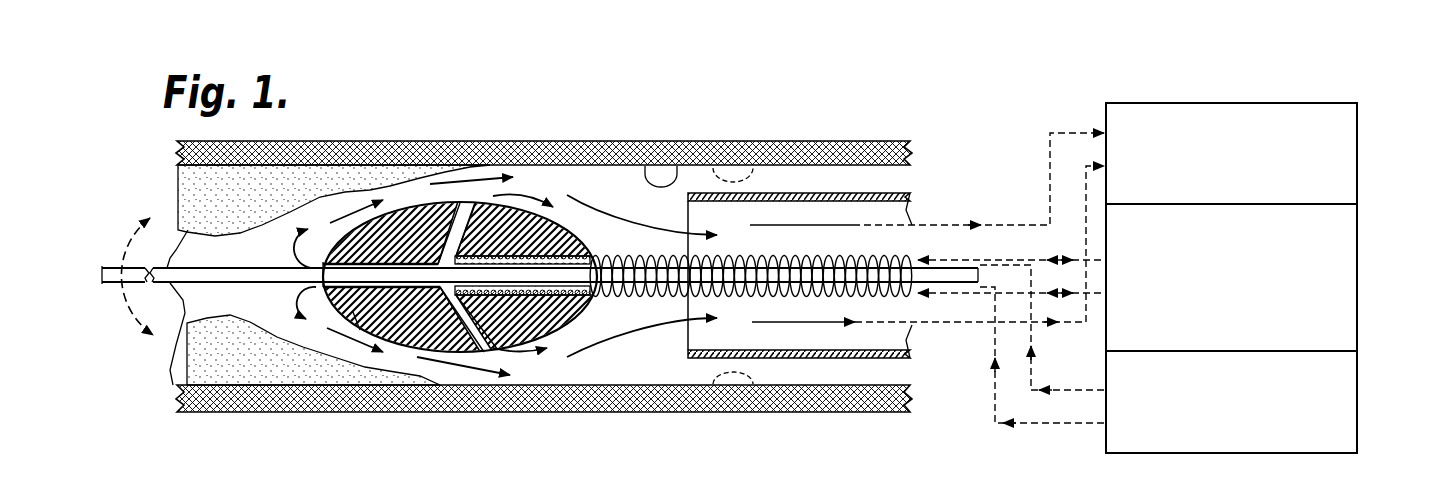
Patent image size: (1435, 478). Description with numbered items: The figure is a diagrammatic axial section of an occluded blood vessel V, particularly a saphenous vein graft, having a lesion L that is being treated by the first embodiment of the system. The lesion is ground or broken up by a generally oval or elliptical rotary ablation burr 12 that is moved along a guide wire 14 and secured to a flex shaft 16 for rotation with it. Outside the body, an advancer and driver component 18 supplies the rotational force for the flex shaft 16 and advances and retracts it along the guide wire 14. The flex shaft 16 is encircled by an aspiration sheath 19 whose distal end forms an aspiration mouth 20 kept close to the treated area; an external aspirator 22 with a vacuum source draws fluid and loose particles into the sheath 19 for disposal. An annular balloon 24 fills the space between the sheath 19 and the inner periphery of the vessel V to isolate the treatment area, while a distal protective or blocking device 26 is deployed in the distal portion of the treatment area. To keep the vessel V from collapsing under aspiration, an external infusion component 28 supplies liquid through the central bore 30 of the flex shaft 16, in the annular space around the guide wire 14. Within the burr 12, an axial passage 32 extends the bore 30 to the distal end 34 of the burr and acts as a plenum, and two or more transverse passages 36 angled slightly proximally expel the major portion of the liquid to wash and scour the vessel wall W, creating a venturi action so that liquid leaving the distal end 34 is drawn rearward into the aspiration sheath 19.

The rotary ablation burr 12 is at (425, 210).
The guide wire 14 is at (168, 283).
The flex shaft 16 is at (637, 290).
The advancer and driver component 18 is at (1330, 278).
The aspiration sheath 19 is at (895, 197).
The aspiration mouth 20 is at (697, 341).
The external aspirator 22 is at (1335, 163).
The annular balloon 24 is at (737, 183).
The distal protective or blocking device 26 is at (133, 228).
The external infusion component 28 is at (1330, 400).
The central bore 30 is at (588, 252).
The axial passage 32 is at (353, 312).
The distal end of the burr 34 is at (323, 262).
The transverse passages 36 is at (466, 207).
The lesion L is at (307, 181).
The blood vessel V is at (604, 155).
The vessel wall W is at (678, 142).